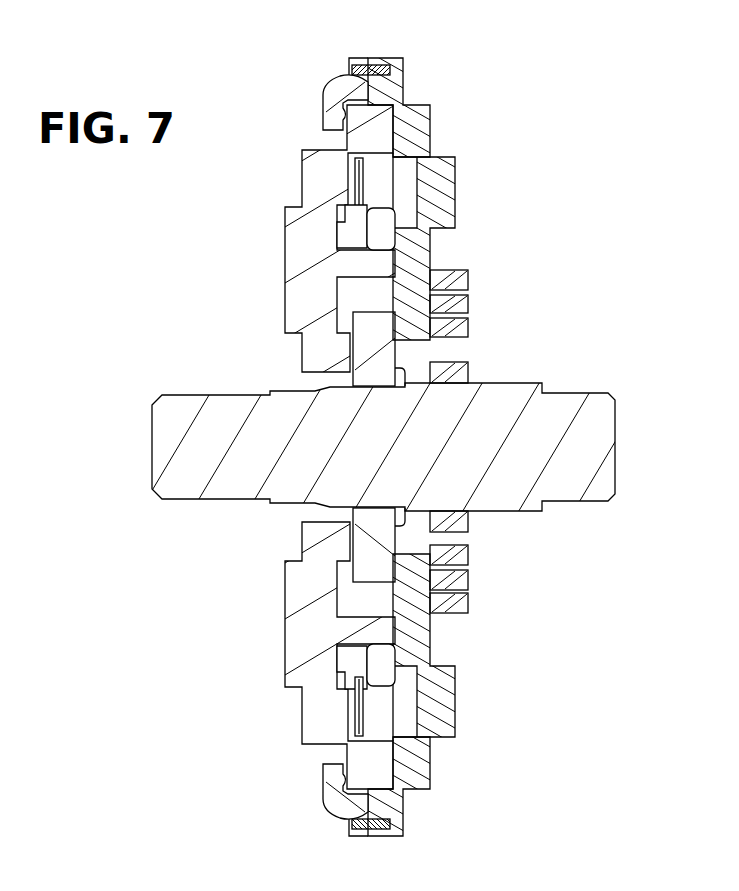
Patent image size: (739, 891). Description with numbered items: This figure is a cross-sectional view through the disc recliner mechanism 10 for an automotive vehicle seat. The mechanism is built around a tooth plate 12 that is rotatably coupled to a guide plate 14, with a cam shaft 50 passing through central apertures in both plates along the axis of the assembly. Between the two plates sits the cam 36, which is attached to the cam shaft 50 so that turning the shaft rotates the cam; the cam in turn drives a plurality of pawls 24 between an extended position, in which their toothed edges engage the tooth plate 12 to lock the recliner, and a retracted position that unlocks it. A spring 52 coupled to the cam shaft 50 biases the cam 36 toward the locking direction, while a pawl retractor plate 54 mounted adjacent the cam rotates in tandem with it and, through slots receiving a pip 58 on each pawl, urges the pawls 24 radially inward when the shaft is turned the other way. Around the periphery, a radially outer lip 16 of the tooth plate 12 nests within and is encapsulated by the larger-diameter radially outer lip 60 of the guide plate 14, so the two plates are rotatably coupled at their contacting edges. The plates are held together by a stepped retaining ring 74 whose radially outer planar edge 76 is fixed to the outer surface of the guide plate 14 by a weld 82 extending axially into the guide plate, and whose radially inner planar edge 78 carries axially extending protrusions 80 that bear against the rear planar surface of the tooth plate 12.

The disc recliner mechanism 10 is at (250, 89).
The tooth plate 12 is at (250, 312).
The guide plate 14 is at (465, 189).
The radially outer lip 16 is at (403, 757).
The pawls 24 is at (410, 204).
The cam 36 is at (383, 360).
The cam shaft 50 is at (597, 438).
The spring 52 is at (468, 605).
The pawl retractor plate 54 is at (363, 187).
The pip 58 is at (345, 230).
The radially outer lip 60 is at (400, 808).
The stepped retaining ring 74 is at (323, 80).
The radially outer planar edge 76 is at (366, 829).
The radially inner planar edge 78 is at (330, 778).
The axially extending protrusions 80 is at (330, 115).
The weld 82 is at (385, 66).